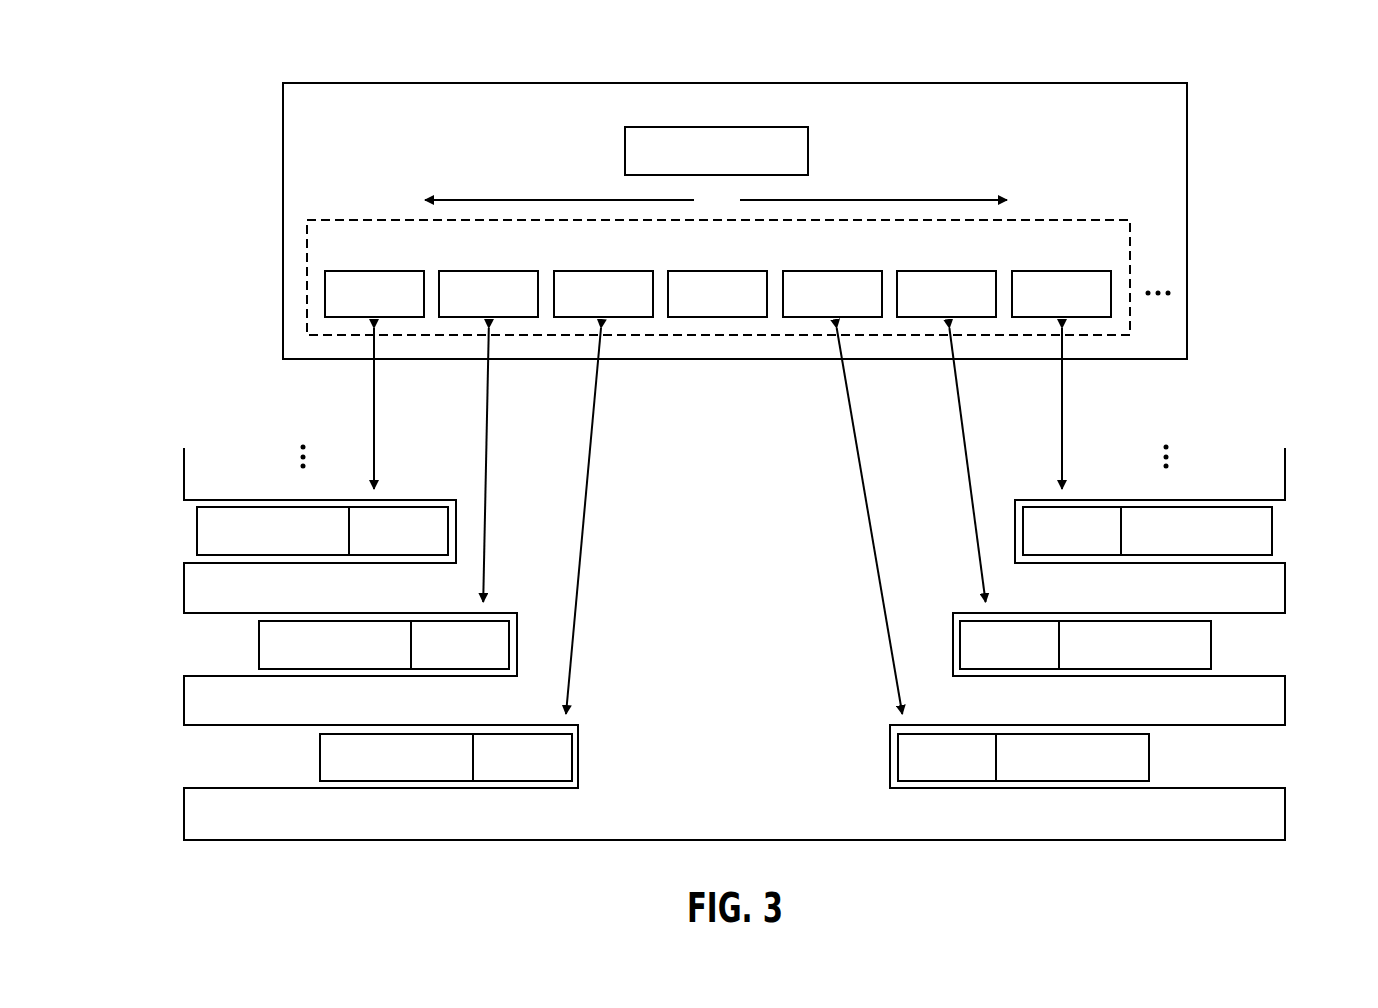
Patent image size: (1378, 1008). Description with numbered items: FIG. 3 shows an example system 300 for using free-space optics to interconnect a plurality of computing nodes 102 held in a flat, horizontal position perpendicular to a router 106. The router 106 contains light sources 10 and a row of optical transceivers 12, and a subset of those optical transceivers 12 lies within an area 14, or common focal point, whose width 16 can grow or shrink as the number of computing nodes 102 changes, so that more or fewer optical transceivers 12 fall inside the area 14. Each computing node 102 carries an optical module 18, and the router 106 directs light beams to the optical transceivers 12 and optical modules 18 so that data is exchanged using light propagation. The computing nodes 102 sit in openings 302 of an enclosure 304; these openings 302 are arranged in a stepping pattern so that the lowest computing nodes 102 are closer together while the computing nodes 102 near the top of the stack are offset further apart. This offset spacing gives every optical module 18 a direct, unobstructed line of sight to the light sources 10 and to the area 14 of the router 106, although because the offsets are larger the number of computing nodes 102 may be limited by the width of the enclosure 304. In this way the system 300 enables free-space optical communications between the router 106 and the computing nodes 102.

The system 300 is at (1174, 39).
The router 106 is at (735, 221).
The light sources 10 is at (716, 151).
The width 16 is at (716, 200).
The area 14 is at (739, 277).
The optical transceivers 12 is at (718, 294).
The computing nodes 102 is at (734, 644).
The optical modules 18 is at (734, 644).
The openings 302 is at (734, 644).
The enclosure 304 is at (315, 841).